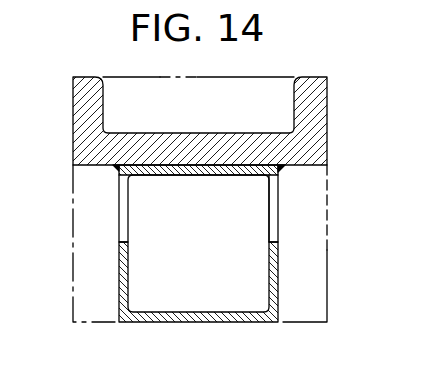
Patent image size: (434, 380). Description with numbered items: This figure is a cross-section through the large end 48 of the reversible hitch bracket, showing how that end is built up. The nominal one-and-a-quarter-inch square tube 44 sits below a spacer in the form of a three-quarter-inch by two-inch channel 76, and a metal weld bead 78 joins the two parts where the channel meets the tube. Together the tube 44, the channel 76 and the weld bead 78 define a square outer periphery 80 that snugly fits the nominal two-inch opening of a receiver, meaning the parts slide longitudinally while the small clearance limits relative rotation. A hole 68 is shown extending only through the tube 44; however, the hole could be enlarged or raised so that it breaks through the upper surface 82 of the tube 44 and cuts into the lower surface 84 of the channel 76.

The square tube 44 is at (166, 311).
The large end 48 is at (356, 109).
The hole 68 is at (268, 220).
The channel 76 is at (73, 141).
The weld bead 78 is at (113, 169).
The square outer periphery 80 is at (266, 78).
The upper surface 82 is at (158, 174).
The lower surface 84 is at (193, 177).